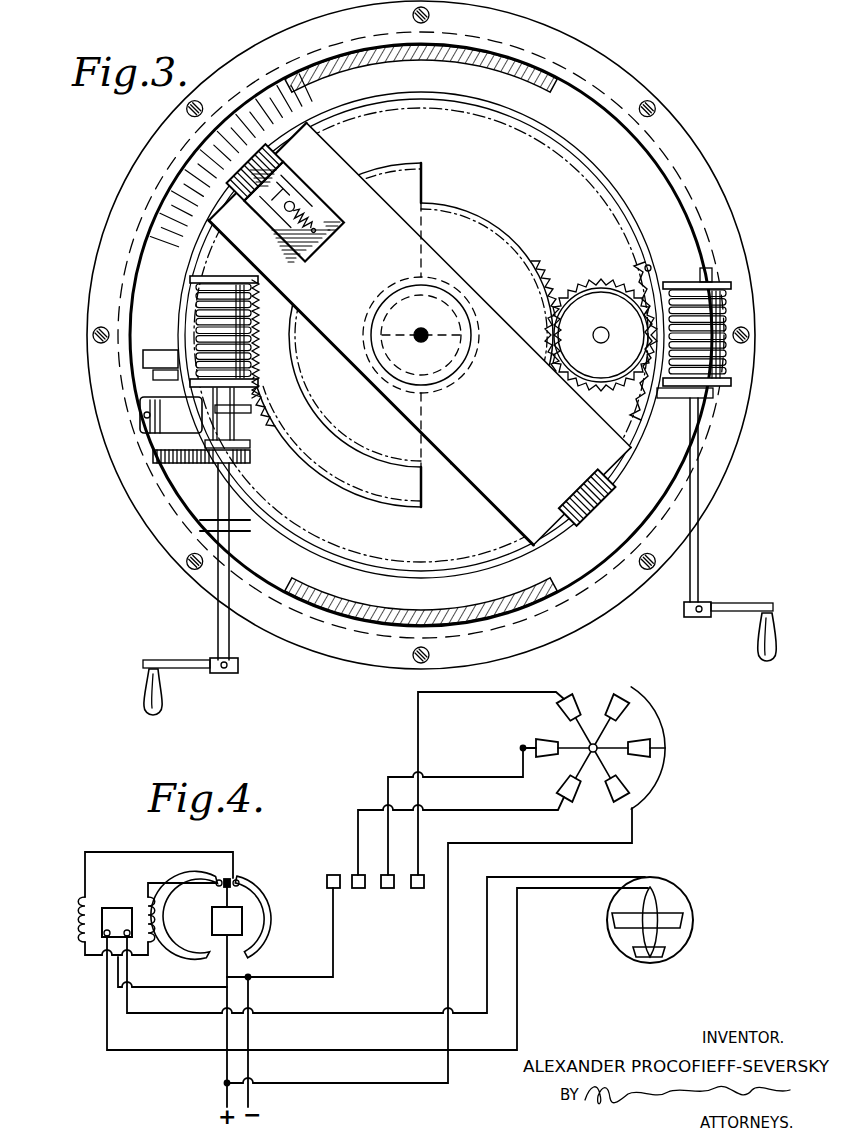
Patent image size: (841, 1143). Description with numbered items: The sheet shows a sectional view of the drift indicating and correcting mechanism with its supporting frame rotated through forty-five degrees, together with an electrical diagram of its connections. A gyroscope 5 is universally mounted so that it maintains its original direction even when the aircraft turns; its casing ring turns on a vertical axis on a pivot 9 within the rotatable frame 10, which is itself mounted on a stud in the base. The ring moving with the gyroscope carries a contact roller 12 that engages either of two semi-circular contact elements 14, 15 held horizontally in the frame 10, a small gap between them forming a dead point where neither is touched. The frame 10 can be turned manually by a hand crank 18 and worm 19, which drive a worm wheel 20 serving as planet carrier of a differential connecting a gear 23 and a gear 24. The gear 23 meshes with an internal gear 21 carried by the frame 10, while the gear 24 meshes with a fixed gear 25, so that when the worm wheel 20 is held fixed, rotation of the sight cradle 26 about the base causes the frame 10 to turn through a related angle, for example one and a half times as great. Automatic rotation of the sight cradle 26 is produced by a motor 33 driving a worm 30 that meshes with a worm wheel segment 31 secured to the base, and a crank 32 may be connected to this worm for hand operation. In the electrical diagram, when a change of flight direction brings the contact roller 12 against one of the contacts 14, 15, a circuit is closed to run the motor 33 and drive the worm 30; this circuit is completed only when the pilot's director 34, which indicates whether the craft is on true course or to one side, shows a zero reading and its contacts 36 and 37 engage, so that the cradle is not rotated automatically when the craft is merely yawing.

In FIG. 4, the gyroscope 5 is at (241, 916).
In FIG. 3, the pivot 9 is at (425, 333).
In FIG. 3, the rotatable frame 10 is at (266, 147).
In FIG. 3, the contact roller 12 is at (143, 360).
In FIG. 4, the contact roller 12 is at (232, 882).
In FIG. 4, the semi-circular contact element 14 is at (198, 948).
In FIG. 4, the semi-circular contact element 15 is at (270, 943).
In FIG. 3, the hand crank 18 is at (766, 646).
In FIG. 3, the worm 19 is at (731, 308).
In FIG. 3, the worm wheel 20 is at (638, 269).
In FIG. 3, the internal gear 21 is at (650, 266).
In FIG. 3, the gear 23 is at (584, 300).
In FIG. 3, the gear 24 is at (577, 286).
In FIG. 3, the fixed gear 25 is at (532, 270).
In FIG. 3, the sight cradle 26 is at (550, 80).
In FIG. 3, the worm 30 is at (196, 323).
In FIG. 3, the worm wheel segment 31 is at (278, 400).
In FIG. 3, the crank 32 is at (166, 708).
In FIG. 3, the motor 33 is at (152, 428).
In FIG. 4, the motor 33 is at (117, 907).
In FIG. 4, the pilot's director 34 is at (672, 904).
In FIG. 4, the contact 36 is at (655, 888).
In FIG. 4, the contact 37 is at (662, 895).